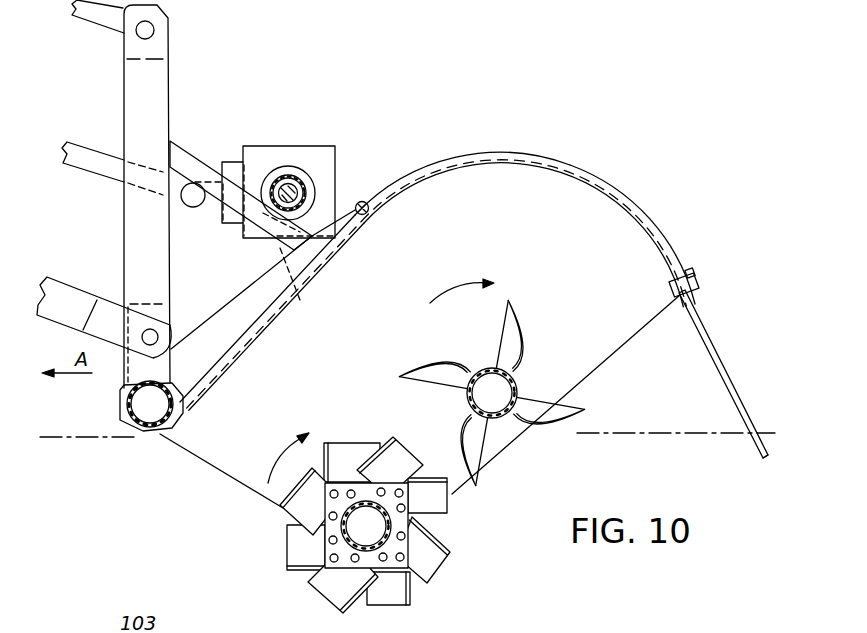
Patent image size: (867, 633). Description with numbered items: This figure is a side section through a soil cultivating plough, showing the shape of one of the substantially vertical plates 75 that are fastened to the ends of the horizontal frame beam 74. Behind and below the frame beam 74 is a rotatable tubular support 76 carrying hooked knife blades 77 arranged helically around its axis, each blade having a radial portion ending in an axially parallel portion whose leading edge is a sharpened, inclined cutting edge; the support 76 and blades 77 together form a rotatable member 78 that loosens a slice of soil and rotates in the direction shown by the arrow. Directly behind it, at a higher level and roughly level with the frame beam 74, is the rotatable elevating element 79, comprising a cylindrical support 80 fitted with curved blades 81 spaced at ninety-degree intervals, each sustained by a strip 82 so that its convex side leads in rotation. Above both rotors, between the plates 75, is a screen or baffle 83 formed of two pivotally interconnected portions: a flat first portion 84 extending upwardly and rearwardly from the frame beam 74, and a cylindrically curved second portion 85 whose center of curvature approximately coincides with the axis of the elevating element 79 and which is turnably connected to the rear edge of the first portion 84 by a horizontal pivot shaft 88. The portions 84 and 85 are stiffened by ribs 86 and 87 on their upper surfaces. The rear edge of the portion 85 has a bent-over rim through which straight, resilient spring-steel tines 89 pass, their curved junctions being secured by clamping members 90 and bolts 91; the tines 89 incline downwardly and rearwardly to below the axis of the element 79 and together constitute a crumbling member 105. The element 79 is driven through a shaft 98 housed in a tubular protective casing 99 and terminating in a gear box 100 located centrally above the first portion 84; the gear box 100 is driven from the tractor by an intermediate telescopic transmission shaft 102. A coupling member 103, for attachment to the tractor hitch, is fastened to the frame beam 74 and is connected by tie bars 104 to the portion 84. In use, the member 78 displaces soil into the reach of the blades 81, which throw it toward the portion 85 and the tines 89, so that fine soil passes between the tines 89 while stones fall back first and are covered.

The frame beam 74 is at (125, 402).
The vertical plates 75 is at (577, 208).
The rotatable tubular support 76 is at (407, 527).
The hooked knife blades 77 is at (390, 455).
The rotatable member 78 is at (357, 507).
The rotatable elevating element 79 is at (491, 382).
The cylindrical support 80 is at (483, 368).
The curved blades 81 is at (527, 338).
The strip 82 is at (507, 313).
The screen or baffle 83 is at (476, 166).
The first portion of screen or baffle 84 is at (270, 314).
The second portion of screen or baffle 85 is at (550, 181).
The ribs 86 is at (252, 292).
The ribs 87 is at (525, 162).
The horizontal pivot shaft 88 is at (365, 203).
The tines 89 is at (712, 357).
The clamping members 90 is at (672, 275).
The bolts 91 is at (697, 270).
The shaft 98 is at (294, 188).
The tubular protective casing 99 is at (286, 167).
The gear box 100 is at (318, 153).
The intermediate telescopic transmission shaft 102 is at (113, 170).
The coupling member 103 is at (133, 90).
The tie bars 104 is at (192, 163).
The crumbling member 105 is at (752, 454).